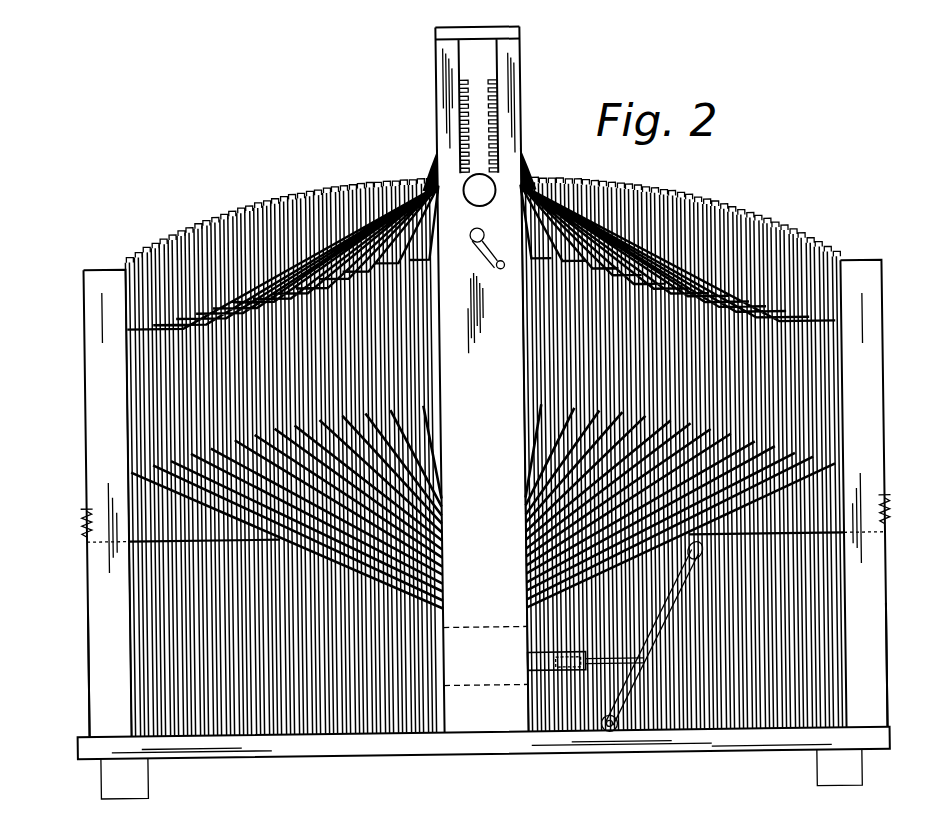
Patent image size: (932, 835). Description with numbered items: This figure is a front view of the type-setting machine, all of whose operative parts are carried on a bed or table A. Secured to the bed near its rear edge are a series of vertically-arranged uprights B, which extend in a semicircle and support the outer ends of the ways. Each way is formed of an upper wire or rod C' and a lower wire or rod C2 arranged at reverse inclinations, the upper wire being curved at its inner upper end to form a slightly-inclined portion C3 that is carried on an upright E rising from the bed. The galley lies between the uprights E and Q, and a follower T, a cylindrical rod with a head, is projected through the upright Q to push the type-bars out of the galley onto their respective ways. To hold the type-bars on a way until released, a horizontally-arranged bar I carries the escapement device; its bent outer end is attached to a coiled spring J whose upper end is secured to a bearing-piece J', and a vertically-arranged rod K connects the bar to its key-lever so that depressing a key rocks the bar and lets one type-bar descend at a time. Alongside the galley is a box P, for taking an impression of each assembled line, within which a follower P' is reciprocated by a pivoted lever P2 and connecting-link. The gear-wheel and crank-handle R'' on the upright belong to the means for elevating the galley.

The upright E is at (522, 100).
The slightly-inclined portion of the way C3 is at (478, 126).
The follower T is at (479, 190).
The crank lever R'' is at (473, 252).
The upright Q is at (481, 379).
The upper wire or rod C' is at (480, 254).
The lower wire or rod C2 is at (756, 430).
The bar I is at (781, 525).
The coiled spring J is at (479, 521).
The bearing-piece J' is at (479, 498).
The uprights B is at (886, 572).
The rod K is at (888, 634).
The box P is at (569, 663).
The follower P' is at (536, 689).
The pivoted lever P2 is at (660, 640).
The bed or table A is at (456, 748).